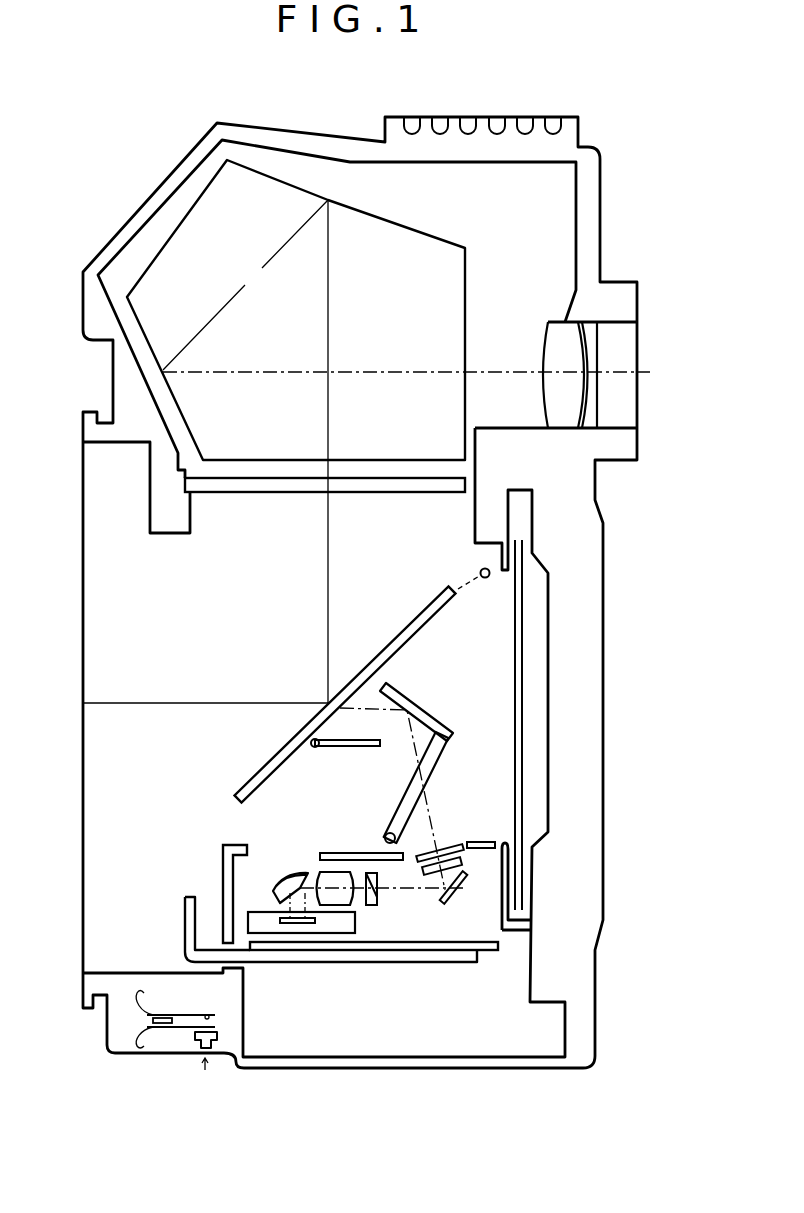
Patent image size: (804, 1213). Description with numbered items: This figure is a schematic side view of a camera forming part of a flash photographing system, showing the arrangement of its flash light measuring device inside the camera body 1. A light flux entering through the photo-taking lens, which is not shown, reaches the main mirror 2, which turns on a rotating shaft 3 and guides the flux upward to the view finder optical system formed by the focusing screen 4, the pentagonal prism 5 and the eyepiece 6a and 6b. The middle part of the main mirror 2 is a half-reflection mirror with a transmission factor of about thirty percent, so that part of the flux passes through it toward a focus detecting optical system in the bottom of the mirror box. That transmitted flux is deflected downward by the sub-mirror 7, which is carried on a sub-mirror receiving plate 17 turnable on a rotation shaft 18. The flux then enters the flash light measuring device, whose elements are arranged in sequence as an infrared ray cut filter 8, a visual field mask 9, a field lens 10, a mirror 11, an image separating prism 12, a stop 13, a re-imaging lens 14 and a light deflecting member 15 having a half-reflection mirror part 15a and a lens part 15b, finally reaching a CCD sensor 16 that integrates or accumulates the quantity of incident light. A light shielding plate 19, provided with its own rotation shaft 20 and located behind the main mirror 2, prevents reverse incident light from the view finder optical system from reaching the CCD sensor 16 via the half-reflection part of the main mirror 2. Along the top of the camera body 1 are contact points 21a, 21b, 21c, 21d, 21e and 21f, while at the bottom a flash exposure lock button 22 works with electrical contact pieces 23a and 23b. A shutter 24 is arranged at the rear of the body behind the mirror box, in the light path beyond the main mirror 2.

The camera body 1 is at (316, 136).
The main mirror 2 is at (262, 772).
The rotating shaft 3 is at (485, 580).
The focusing screen 4 is at (256, 492).
The pentagonal prism 5 is at (455, 270).
The eyepiece 6a is at (548, 358).
The eyepiece 6b is at (600, 360).
The sub-mirror 7 is at (385, 702).
The infrared ray cut filter 8 is at (446, 853).
The visual field mask 9 is at (470, 850).
The field lens 10 is at (432, 873).
The mirror 11 is at (455, 890).
The image separating prism 12 is at (378, 897).
The stop 13 is at (355, 905).
The re-imaging lens 14 is at (314, 851).
The light deflecting member 15 is at (272, 898).
The half-reflection mirror part 15a is at (290, 910).
The lens part 15b is at (288, 878).
The CCD sensor 16 is at (313, 923).
The sub-mirror receiving plate 17 is at (450, 732).
The rotation shaft 18 is at (386, 834).
The light shielding plate 19 is at (370, 747).
The rotation shaft 20 is at (315, 748).
The contact point 21a is at (412, 134).
The contact point 21b is at (440, 134).
The contact point 21c is at (468, 134).
The contact point 21d is at (497, 134).
The contact point 21e is at (525, 134).
The contact point 21f is at (553, 134).
The flash exposure lock button 22 is at (200, 1050).
The electrical contact piece 23a is at (178, 1027).
The electrical contact piece 23b is at (190, 1015).
The shutter 24 is at (515, 657).